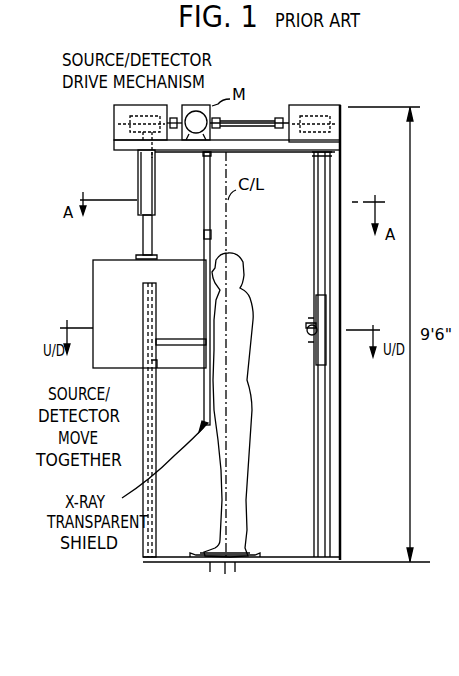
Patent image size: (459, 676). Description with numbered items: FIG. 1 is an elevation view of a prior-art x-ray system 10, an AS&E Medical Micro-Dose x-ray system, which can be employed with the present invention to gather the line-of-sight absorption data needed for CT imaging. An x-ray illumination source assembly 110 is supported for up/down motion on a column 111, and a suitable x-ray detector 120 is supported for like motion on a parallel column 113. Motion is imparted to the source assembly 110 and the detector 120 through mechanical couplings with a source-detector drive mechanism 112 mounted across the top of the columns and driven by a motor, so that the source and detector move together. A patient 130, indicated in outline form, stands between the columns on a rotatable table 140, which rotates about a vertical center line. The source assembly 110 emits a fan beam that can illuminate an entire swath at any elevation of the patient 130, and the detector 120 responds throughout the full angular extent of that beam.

The x-ray system 10 is at (126, 182).
The source-detector drive mechanism 112 is at (112, 116).
The parallel column 113 is at (341, 181).
The column 111 is at (153, 236).
The x-ray illumination source assembly 110 is at (92, 276).
The x-ray detector 120 is at (300, 350).
The patient 130 is at (250, 436).
The rotatable table 140 is at (248, 555).